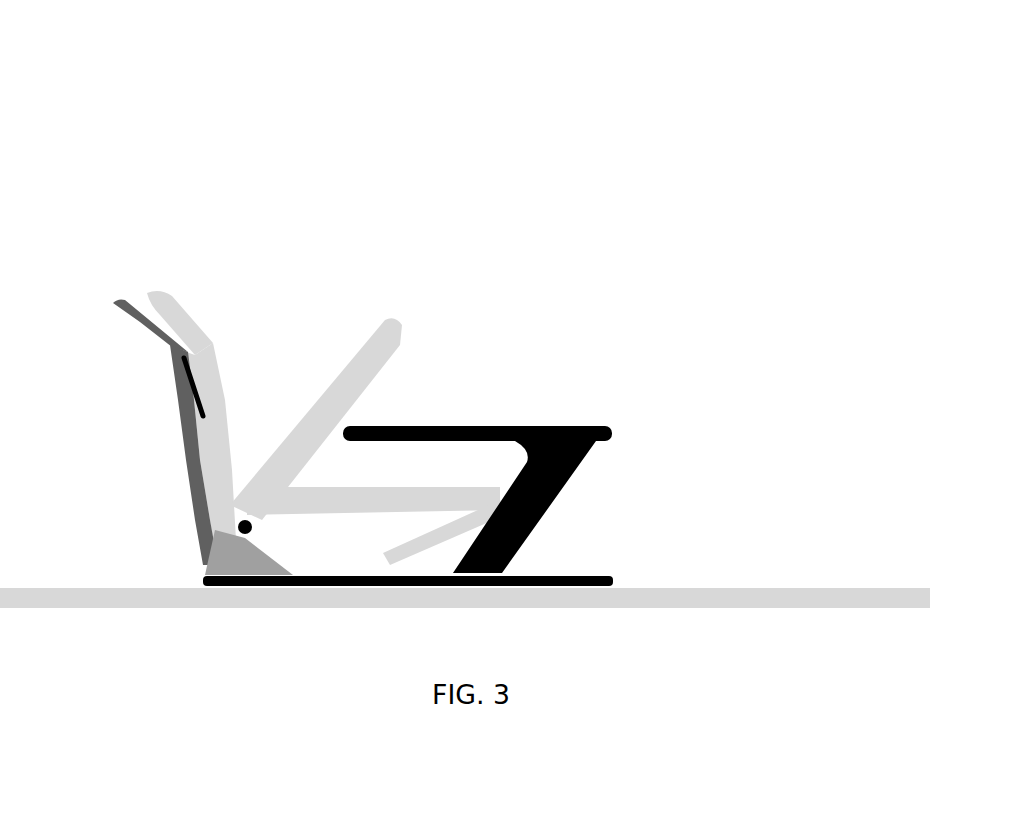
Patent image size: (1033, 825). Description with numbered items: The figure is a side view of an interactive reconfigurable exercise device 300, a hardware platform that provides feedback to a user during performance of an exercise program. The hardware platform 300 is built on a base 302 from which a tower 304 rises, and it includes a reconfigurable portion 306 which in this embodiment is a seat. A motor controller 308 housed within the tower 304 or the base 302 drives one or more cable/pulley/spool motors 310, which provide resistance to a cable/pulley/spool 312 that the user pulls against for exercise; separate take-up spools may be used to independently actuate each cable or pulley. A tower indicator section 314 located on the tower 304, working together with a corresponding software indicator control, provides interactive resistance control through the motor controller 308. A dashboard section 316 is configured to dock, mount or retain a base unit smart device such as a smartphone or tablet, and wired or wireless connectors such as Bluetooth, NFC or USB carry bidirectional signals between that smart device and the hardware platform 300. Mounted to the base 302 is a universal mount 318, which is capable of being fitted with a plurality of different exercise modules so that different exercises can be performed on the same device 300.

The interactive reconfigurable exercise device 300 is at (497, 131).
The base 302 is at (373, 590).
The tower 304 is at (218, 483).
The reconfigurable portion 306 is at (493, 401).
The motor controller 308 is at (252, 557).
The cable/pulley/spool motor 310 is at (227, 555).
The cable/pulley/spool 312 is at (168, 350).
The tower indicator section 314 is at (200, 383).
The dashboard section 316 is at (162, 318).
The universal mount 318 is at (510, 550).